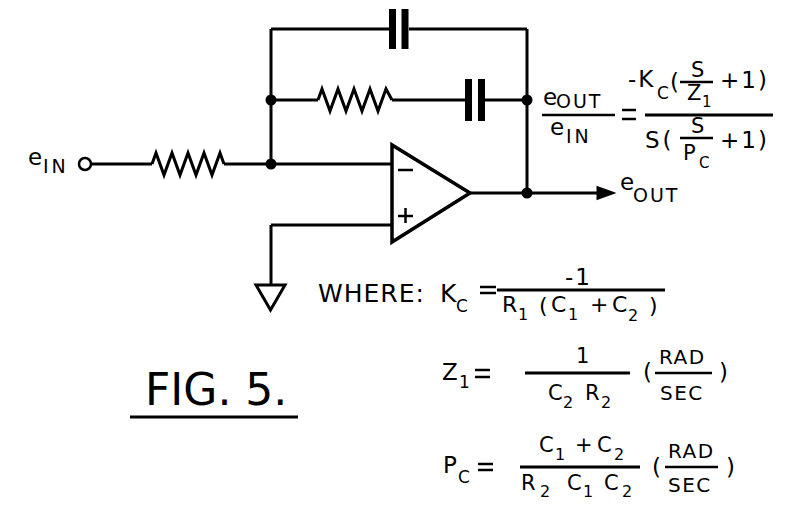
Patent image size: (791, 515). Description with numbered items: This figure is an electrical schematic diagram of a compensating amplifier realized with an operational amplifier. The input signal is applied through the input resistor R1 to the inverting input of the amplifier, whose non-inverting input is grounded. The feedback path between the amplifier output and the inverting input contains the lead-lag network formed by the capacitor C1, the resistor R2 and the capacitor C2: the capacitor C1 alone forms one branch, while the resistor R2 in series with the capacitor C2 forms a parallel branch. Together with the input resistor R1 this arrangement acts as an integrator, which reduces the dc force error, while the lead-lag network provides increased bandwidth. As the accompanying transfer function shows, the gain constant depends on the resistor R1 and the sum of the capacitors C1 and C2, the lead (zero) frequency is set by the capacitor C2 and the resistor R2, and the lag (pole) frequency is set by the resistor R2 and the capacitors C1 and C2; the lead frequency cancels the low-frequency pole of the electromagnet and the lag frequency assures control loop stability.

The input resistor R1 is at (188, 184).
The lead-lag network resistor R2 is at (355, 118).
The lead-lag network capacitor C1 is at (381, 37).
The lead-lag network capacitor C2 is at (477, 119).